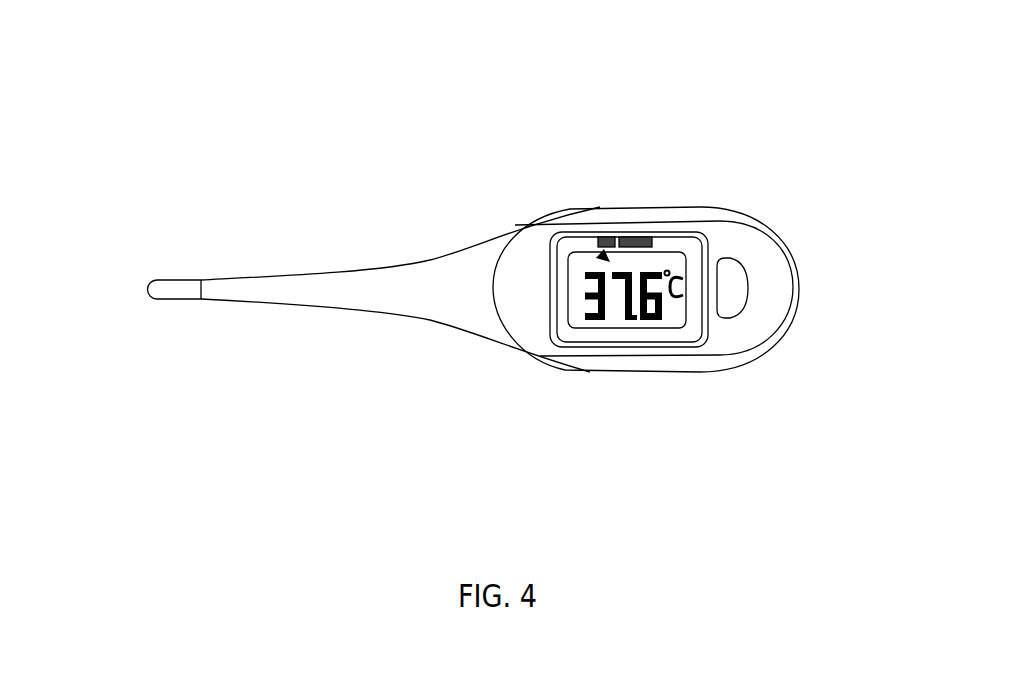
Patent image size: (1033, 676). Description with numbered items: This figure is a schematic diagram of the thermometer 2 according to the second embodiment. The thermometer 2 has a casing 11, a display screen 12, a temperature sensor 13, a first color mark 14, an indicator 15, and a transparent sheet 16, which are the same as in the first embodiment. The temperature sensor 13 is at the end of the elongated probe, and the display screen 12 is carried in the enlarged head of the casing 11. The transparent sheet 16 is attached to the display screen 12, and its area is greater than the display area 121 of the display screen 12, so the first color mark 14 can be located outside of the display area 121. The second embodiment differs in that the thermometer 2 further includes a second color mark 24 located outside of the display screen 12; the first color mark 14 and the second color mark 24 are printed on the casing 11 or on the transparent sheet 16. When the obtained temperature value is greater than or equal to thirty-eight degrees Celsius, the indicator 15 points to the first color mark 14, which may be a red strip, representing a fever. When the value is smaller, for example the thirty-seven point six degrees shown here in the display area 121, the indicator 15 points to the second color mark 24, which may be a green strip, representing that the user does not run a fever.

The thermometer 2 is at (752, 109).
The casing 11 is at (330, 274).
The display screen 12 is at (581, 331).
The display area 121 is at (677, 317).
The temperature sensor 13 is at (148, 283).
The first color mark 14 is at (647, 236).
The indicator 15 is at (600, 254).
The transparent sheet 16 is at (692, 243).
The second color mark 24 is at (603, 236).